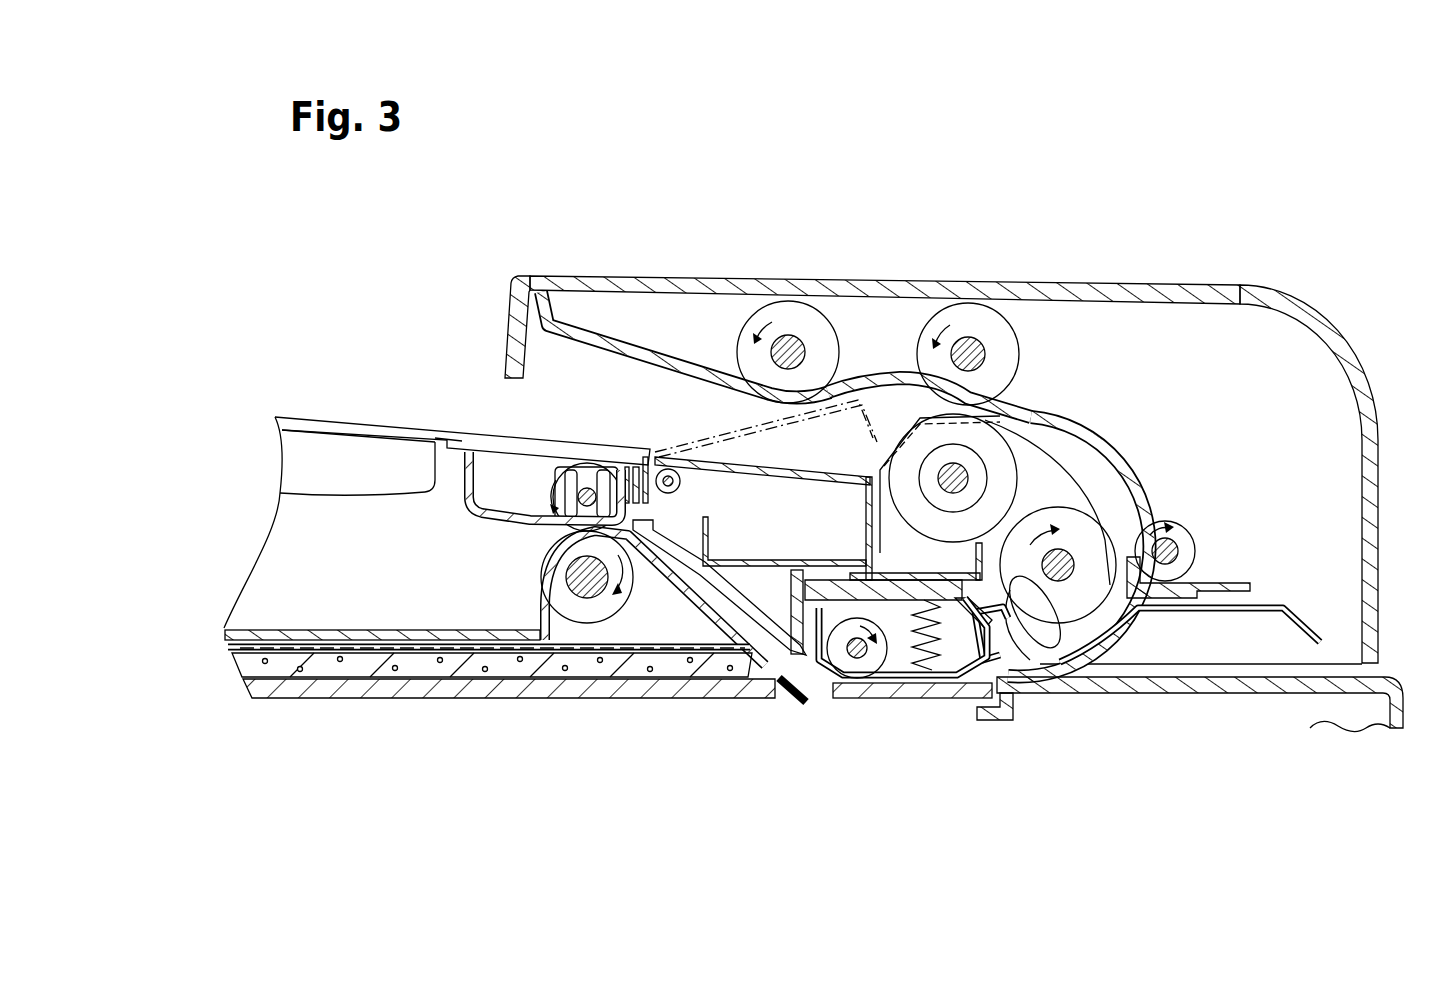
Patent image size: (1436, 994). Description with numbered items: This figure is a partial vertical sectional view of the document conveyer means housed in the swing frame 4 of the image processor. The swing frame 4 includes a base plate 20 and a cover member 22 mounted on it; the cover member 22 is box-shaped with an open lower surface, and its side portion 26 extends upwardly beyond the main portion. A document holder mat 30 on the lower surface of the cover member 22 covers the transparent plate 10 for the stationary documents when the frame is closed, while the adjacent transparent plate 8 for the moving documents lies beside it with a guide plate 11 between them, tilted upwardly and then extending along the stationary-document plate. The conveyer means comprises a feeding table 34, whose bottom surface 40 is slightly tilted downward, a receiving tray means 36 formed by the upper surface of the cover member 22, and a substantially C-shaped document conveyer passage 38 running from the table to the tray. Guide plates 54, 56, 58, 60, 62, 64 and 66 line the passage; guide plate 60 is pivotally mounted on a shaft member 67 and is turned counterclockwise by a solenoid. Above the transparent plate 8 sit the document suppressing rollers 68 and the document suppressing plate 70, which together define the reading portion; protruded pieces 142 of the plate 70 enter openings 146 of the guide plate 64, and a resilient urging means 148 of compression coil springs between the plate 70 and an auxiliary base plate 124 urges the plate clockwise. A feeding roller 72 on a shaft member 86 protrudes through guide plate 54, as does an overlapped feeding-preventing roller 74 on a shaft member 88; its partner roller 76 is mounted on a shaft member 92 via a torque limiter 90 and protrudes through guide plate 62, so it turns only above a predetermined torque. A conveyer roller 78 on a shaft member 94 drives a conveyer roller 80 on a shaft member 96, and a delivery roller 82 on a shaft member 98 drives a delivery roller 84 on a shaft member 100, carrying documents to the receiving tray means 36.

The swing frame 4 is at (1314, 266).
The transparent plate for the moving documents 8 is at (921, 703).
The transparent plate for the stationary documents 10 is at (366, 699).
The guide plate 11 is at (790, 697).
The base plate 20 is at (387, 650).
The cover member 22 is at (246, 547).
The side portion 26 is at (906, 282).
The document holder mat 30 is at (608, 650).
The feeding table 34 is at (409, 426).
The receiving tray means 36 is at (293, 630).
The document conveyer passage 38 is at (1012, 492).
The bottom surface 40 is at (331, 418).
The guide plate 54 is at (655, 362).
The guide plate 56 is at (1128, 632).
The guide plate 58 is at (690, 633).
The guide plate 60 is at (778, 473).
The guide plate 62 is at (1057, 460).
The guide plate 64 is at (1060, 647).
The guide plate 66 is at (490, 510).
The shaft member 67 is at (674, 484).
The document suppressing rollers 68 is at (880, 672).
The document suppressing plate 70 is at (952, 692).
The feeding roller 72 is at (831, 305).
The overlapped feeding-preventing roller 74 is at (1010, 332).
The overlapped feeding-preventing roller 76 is at (1047, 437).
The conveyer roller 78 is at (1052, 503).
The conveyer roller 80 is at (1148, 535).
The delivery roller 82 is at (587, 600).
The delivery roller 84 is at (580, 494).
The shaft member 86 is at (805, 345).
The shaft member 88 is at (975, 345).
The torque limiter 90 is at (1118, 447).
The shaft member 92 is at (948, 483).
The shaft member 94 is at (1068, 557).
The shaft member 96 is at (1180, 552).
The shaft member 98 is at (597, 587).
The shaft member 100 is at (589, 492).
The auxiliary base plate 124 is at (688, 648).
The protruded pieces 142 is at (1083, 647).
The openings 146 is at (1013, 690).
The resilient urging means 148 is at (905, 675).